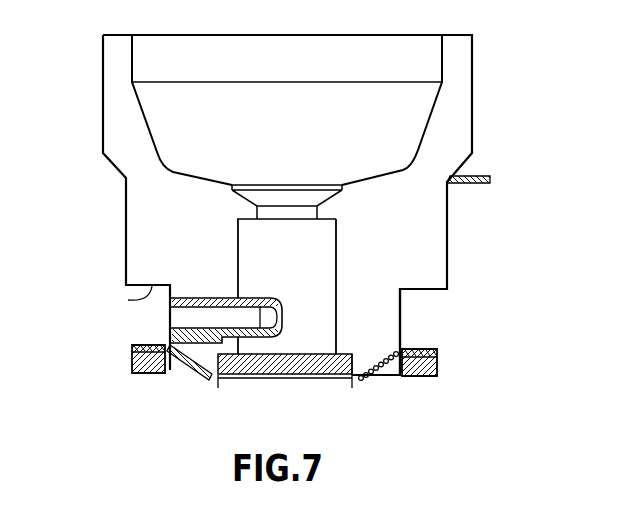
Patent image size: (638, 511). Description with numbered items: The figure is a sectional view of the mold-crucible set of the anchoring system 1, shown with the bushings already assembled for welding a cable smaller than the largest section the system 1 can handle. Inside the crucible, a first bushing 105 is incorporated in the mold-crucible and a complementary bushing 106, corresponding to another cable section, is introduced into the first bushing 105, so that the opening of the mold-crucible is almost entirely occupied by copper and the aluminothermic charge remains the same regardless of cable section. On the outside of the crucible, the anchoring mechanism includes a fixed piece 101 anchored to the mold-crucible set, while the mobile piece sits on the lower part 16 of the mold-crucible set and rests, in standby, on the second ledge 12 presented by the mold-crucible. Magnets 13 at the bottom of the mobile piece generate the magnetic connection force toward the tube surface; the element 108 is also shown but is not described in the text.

The anchoring system 1 is at (488, 82).
The fixed piece 101 is at (489, 176).
The second ledge 12 is at (128, 300).
The lower part 16 is at (402, 320).
The complementary bushing 106 is at (205, 325).
The first bushing 105 is at (280, 332).
The spring 108 is at (172, 330).
The magnet 13 is at (148, 373).